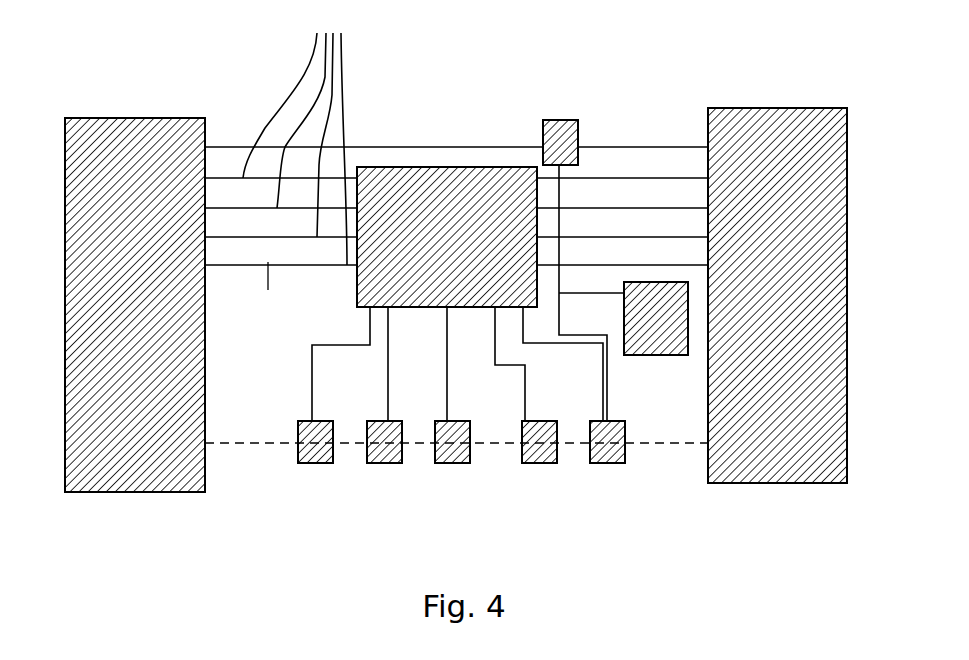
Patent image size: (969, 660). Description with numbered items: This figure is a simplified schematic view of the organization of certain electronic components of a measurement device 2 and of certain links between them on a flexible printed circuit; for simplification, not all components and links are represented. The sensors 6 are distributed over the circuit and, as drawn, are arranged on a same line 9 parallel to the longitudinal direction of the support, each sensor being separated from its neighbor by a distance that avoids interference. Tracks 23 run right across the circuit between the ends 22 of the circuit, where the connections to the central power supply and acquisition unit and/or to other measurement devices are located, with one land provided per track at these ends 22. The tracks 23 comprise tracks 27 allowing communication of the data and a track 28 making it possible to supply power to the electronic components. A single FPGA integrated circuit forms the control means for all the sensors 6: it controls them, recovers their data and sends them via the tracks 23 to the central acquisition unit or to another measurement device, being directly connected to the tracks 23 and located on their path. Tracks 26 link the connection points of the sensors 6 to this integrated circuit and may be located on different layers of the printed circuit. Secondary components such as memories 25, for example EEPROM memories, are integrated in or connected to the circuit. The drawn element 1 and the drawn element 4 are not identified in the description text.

The sensor chip 1 is at (447, 178).
The pixel regions 2 is at (452, 170).
The readout unit 4 is at (561, 120).
The contact pads 6 is at (315, 463).
The separation line 9 is at (638, 443).
The connection blocks 22 is at (148, 118).
The signal lines 23 is at (456, 135).
The control unit 25 is at (673, 355).
The connection lines 26 is at (447, 395).
The supply line 27 is at (266, 237).
The bus line 28 is at (428, 147).